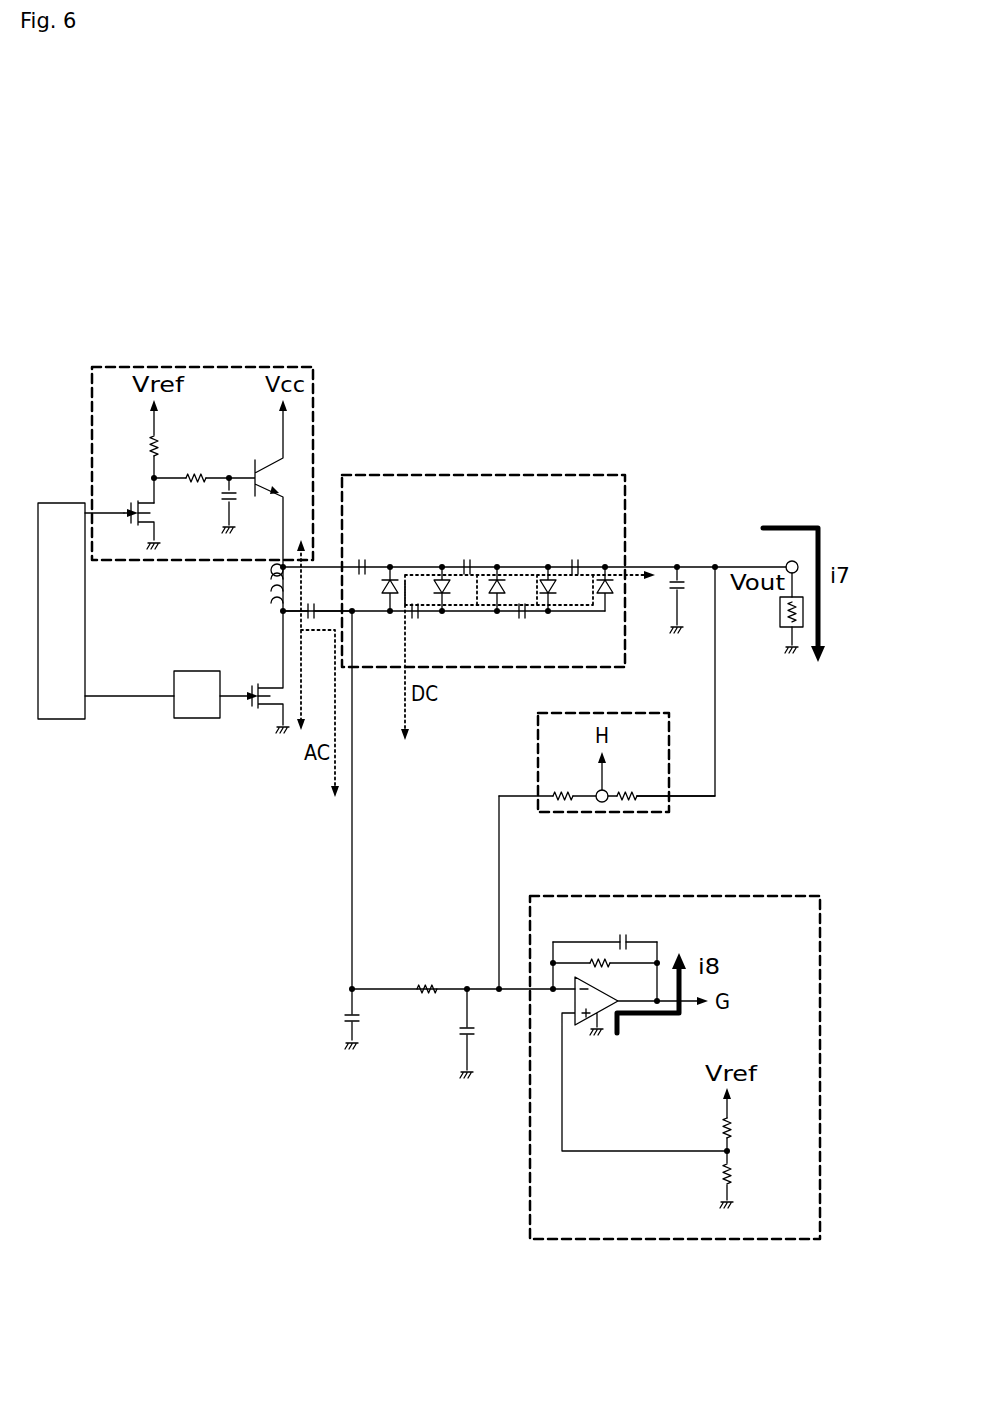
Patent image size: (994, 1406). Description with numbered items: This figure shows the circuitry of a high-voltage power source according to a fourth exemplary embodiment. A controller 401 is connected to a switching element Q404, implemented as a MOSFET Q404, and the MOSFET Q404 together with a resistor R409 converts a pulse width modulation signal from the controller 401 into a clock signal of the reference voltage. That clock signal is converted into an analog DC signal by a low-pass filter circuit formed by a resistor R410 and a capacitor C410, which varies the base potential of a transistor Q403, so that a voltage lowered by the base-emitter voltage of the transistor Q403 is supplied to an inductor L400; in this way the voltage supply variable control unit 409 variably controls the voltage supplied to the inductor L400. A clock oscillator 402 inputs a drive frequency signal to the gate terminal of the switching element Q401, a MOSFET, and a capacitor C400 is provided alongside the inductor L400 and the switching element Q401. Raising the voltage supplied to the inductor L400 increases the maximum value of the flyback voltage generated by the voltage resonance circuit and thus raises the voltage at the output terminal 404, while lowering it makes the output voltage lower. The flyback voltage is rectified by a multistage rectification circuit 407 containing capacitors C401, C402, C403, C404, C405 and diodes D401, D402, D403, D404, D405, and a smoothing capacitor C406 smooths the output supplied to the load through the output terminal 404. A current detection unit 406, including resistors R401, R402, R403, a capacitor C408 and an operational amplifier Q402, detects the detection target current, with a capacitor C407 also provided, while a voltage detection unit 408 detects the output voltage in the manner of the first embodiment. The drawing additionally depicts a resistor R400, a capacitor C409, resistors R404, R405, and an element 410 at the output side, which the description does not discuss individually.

The controller 401 is at (60, 720).
The clock oscillator 402 is at (190, 671).
The output terminal 404 is at (795, 554).
The current detection unit 406 is at (722, 896).
The multistage rectification circuit 407 is at (492, 474).
The voltage detection unit 408 is at (645, 713).
The voltage supply variable control unit 409 is at (210, 367).
The load resistor 410 is at (780, 616).
The inductor L400 is at (278, 589).
The switching element Q401 is at (258, 713).
The operational amplifier Q402 is at (578, 1030).
The transistor Q403 is at (295, 462).
The switching element Q404 is at (138, 536).
The resistor R400 is at (427, 983).
The resistor R401 is at (587, 958).
The resistor R402 is at (735, 1128).
The resistor R403 is at (735, 1173).
The divider resistor R404 is at (570, 790).
The divider resistor R405 is at (627, 790).
The resistor R409 is at (150, 444).
The resistor R410 is at (193, 472).
The capacitor C400 is at (344, 1020).
The capacitor C401 is at (360, 560).
The capacitor C402 is at (417, 620).
The capacitor C403 is at (469, 560).
The capacitor C404 is at (524, 620).
The capacitor C405 is at (573, 560).
The smoothing capacitor C406 is at (673, 577).
The capacitor C407 is at (460, 1033).
The capacitor C408 is at (625, 935).
The coupling capacitor C409 is at (305, 614).
The capacitor C410 is at (222, 510).
The diode D401 is at (390, 602).
The diode D402 is at (440, 577).
The diode D403 is at (496, 600).
The diode D404 is at (545, 577).
The diode D405 is at (603, 600).